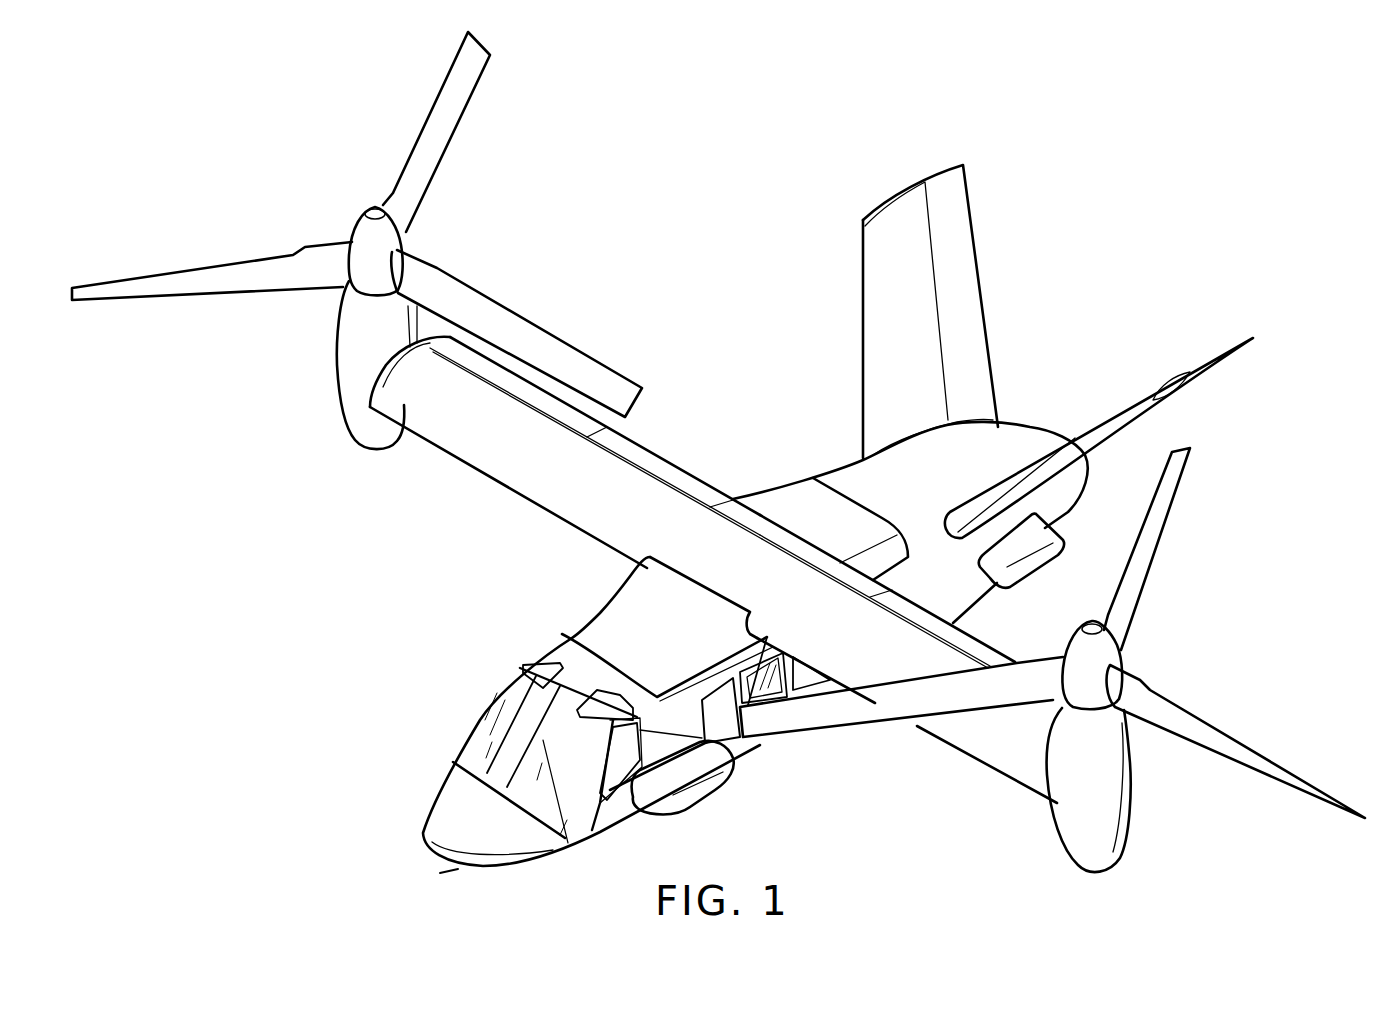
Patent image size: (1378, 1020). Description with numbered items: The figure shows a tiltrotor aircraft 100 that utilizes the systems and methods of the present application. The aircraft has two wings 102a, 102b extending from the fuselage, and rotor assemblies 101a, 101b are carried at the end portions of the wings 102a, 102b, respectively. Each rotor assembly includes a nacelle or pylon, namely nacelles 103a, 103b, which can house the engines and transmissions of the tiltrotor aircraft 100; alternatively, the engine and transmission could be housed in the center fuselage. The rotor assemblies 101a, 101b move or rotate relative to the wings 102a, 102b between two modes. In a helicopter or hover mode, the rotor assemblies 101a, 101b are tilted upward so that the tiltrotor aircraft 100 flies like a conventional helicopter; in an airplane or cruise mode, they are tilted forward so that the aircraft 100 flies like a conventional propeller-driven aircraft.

The tiltrotor aircraft 100 is at (1174, 111).
The rotor assembly 101a is at (365, 194).
The rotor assembly 101b is at (1140, 655).
The wing 102a is at (532, 488).
The wing 102b is at (1002, 760).
The nacelle 103a is at (347, 373).
The nacelle 103b is at (1072, 827).